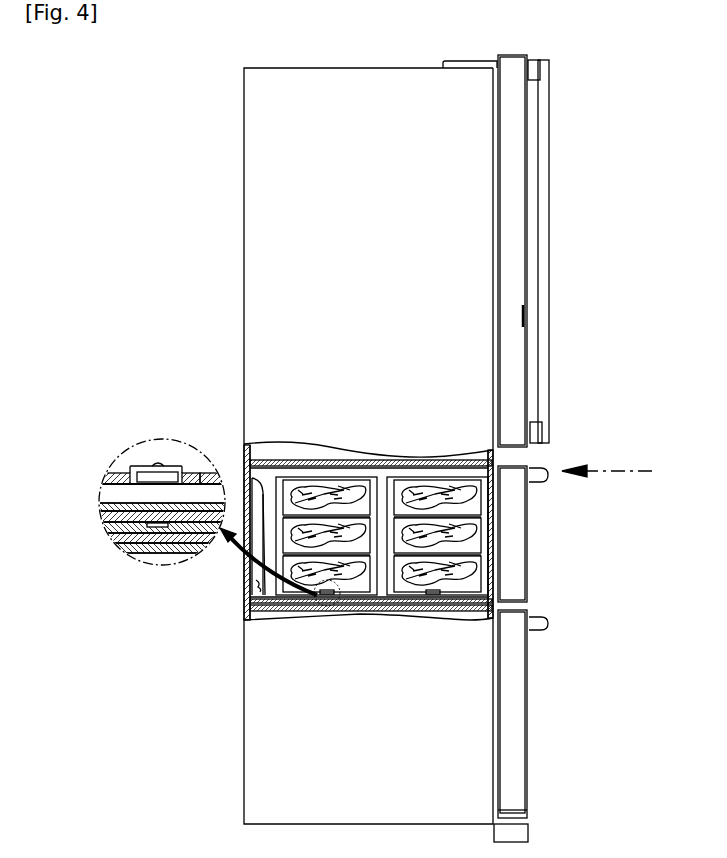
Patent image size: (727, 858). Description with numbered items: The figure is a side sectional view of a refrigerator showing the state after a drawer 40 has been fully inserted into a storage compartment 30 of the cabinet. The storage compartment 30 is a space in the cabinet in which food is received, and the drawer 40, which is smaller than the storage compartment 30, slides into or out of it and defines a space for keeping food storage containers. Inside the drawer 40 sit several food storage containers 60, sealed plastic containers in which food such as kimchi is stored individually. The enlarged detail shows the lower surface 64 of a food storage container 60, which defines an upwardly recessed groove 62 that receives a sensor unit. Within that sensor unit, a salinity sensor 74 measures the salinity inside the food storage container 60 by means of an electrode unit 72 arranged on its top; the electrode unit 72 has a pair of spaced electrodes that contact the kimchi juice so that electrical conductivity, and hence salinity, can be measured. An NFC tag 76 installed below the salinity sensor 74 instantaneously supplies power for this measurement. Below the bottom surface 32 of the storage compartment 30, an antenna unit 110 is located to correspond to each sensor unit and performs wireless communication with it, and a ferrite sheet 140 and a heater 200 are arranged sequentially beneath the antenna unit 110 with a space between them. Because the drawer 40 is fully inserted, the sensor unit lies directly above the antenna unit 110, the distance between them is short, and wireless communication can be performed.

The storage compartment 30 is at (257, 585).
The bottom surface 32 is at (195, 517).
The drawer 40 is at (484, 517).
The food storage container 60 is at (482, 563).
The groove 62 is at (180, 478).
The lower surface 64 is at (203, 478).
The electrode unit 72 is at (167, 466).
The salinity sensor 74 is at (148, 477).
The NFC tag 76 is at (125, 475).
The antenna unit 110 is at (145, 527).
The ferrite sheet 140 is at (177, 533).
The heater 200 is at (148, 540).